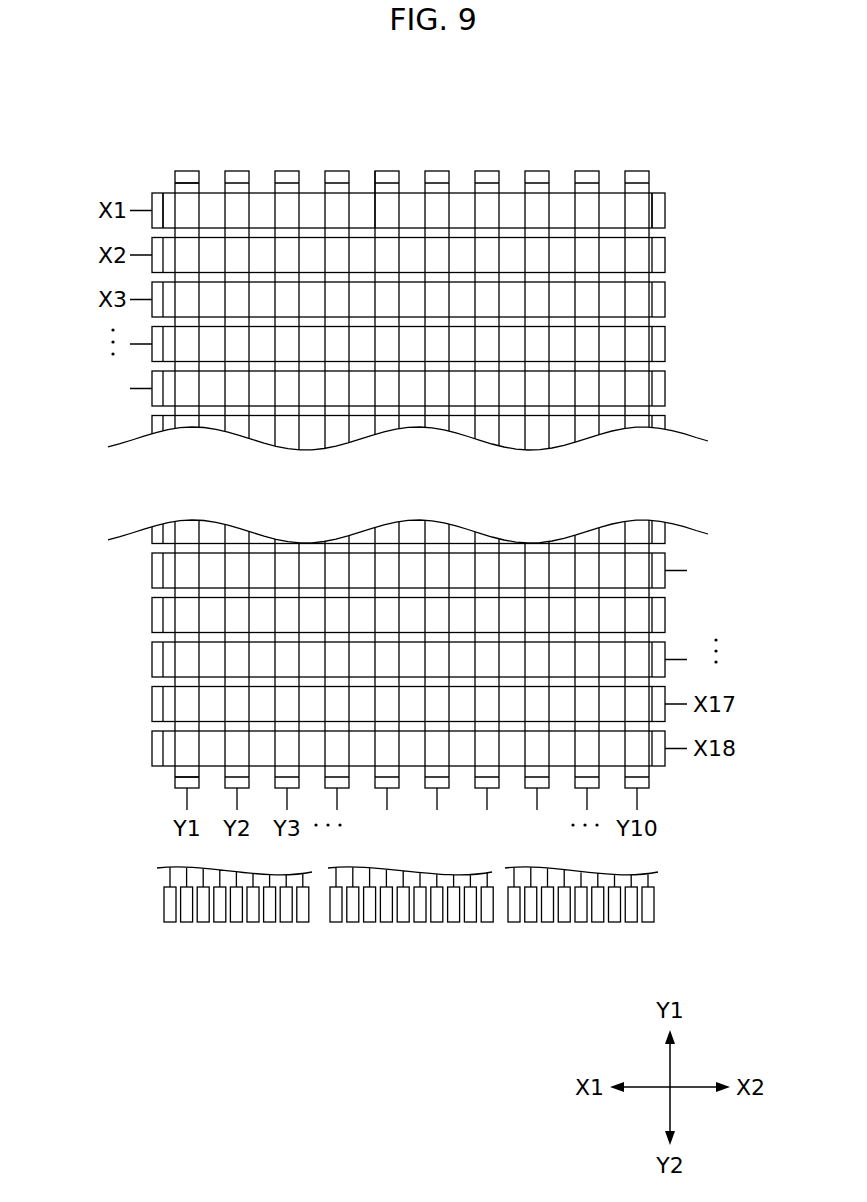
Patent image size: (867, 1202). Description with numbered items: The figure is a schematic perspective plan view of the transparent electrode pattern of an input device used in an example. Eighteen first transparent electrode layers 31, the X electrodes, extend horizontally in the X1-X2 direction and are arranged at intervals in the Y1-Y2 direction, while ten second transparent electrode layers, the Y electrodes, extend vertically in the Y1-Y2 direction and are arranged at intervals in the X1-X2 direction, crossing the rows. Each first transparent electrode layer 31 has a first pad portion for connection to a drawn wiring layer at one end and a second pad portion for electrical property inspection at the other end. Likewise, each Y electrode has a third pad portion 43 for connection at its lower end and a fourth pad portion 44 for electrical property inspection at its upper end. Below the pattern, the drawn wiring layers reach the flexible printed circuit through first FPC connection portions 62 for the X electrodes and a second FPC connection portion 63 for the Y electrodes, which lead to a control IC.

The first transparent electrode layer 31 is at (262, 205).
The third pad portion 43 is at (183, 782).
The fourth pad portion 44 is at (187, 178).
The first FPC connection portion 62 is at (171, 915).
The second FPC connection portion 63 is at (336, 915).